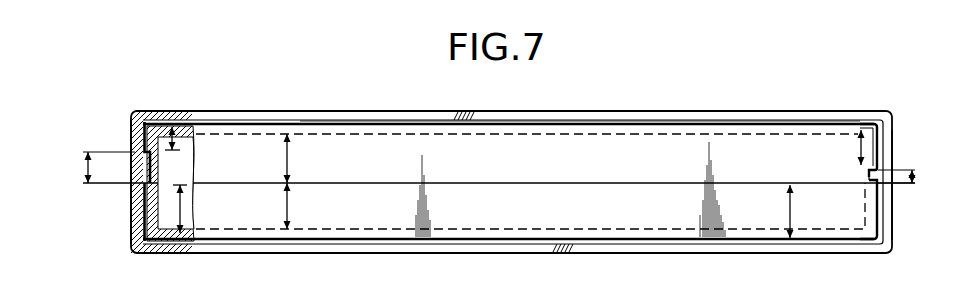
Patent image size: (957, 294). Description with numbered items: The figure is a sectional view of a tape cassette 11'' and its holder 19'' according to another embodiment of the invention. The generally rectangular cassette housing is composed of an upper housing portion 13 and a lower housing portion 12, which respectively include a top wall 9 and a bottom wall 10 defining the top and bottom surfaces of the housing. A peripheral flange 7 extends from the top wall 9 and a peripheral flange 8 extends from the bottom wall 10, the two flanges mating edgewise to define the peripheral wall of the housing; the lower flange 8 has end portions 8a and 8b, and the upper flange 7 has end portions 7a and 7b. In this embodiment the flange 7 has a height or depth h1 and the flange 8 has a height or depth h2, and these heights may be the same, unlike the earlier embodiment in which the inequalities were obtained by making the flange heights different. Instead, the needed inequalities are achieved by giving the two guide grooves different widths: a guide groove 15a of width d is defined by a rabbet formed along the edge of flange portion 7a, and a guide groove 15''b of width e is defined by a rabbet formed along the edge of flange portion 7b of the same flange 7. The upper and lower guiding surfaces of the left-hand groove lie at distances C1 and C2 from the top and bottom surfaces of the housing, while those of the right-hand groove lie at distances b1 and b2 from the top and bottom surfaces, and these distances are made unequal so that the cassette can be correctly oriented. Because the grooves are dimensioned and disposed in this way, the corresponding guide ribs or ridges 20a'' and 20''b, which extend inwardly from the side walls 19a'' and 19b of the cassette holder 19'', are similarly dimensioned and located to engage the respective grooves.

The peripheral flange 7 is at (656, 149).
The flange portion 7a is at (152, 127).
The flange portion 7b is at (879, 138).
The peripheral flange 8 is at (630, 215).
The flange portion 8a is at (142, 228).
The flange portion 8b is at (870, 213).
The top wall 9 is at (620, 124).
The bottom wall 10 is at (558, 249).
The cassette 11'' is at (740, 99).
The lower housing portion 12 is at (402, 218).
The upper housing portion 13 is at (521, 150).
The guide groove 15a is at (160, 165).
The guide groove 15''b is at (842, 166).
The cassette holder 19'' is at (511, 163).
The side wall 19a'' is at (107, 180).
The side wall 19b is at (893, 232).
The guide rib 20a'' is at (110, 181).
The guide rib 20''b is at (912, 192).
The guide groove width d is at (88, 170).
The guide groove width e is at (912, 177).
The distance C1 is at (193, 140).
The distance C2 is at (186, 207).
The flange height h1 is at (288, 162).
The flange height h2 is at (288, 212).
The distance b1 is at (858, 128).
The distance b2 is at (788, 207).